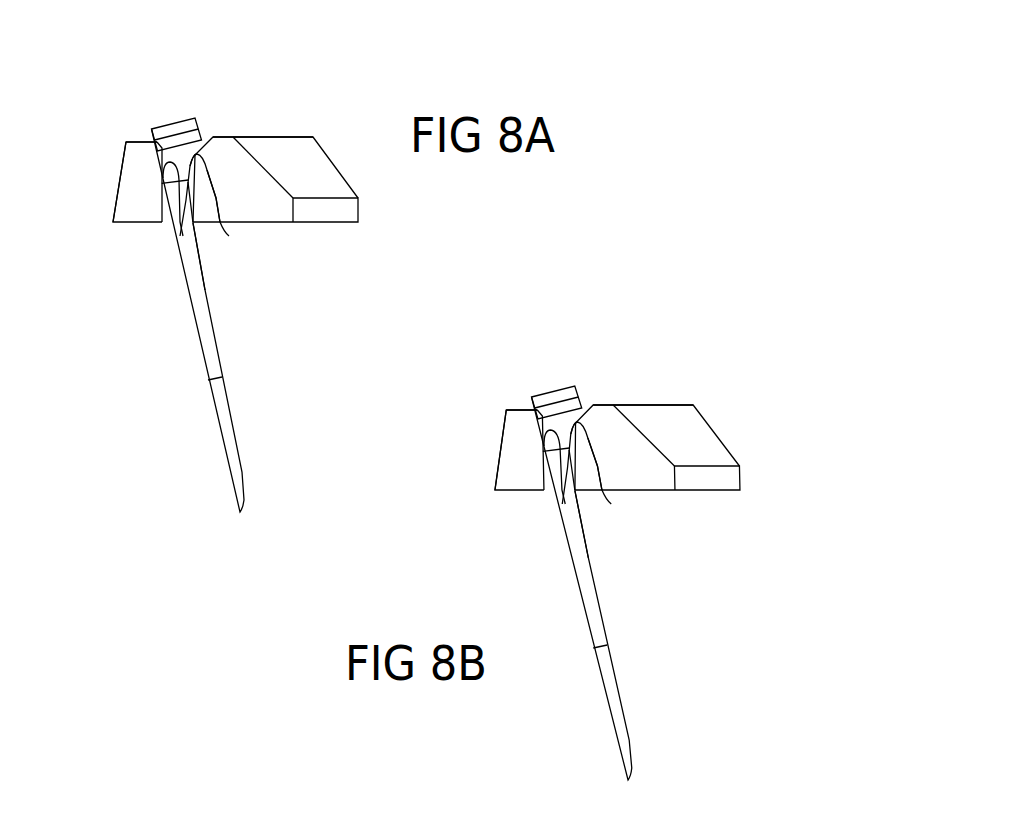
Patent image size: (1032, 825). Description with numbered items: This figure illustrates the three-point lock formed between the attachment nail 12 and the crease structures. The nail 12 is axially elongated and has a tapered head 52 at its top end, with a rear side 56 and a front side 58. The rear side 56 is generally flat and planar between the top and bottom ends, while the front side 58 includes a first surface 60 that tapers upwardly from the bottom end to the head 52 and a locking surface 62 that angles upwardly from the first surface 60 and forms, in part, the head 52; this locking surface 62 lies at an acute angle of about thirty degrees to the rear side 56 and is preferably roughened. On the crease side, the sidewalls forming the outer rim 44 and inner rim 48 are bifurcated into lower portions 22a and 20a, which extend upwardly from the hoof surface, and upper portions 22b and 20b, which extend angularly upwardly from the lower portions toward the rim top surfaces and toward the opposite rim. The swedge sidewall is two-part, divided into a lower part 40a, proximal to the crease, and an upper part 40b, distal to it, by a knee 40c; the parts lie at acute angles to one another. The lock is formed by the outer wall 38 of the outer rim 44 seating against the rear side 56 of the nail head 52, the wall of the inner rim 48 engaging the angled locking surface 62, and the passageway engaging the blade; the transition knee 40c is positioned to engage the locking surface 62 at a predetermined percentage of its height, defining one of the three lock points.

In FIG. 8A, the attachment nail 12 is at (135, 338).
In FIG. 8B, the attachment nail 12 is at (494, 518).
In FIG. 8A, the lower portion of outer sidewall 20a is at (350, 213).
In FIG. 8B, the lower portion of outer sidewall 20a is at (699, 480).
In FIG. 8A, the upper portion of outer sidewall 20b is at (323, 160).
In FIG. 8B, the upper portion of outer sidewall 20b is at (672, 420).
In FIG. 8A, the lower portion of inner sidewall 22a is at (113, 208).
In FIG. 8B, the lower portion of inner sidewall 22a is at (479, 450).
In FIG. 8A, the upper portion of inner sidewall 22b is at (120, 168).
In FIG. 8B, the upper portion of inner sidewall 22b is at (478, 450).
In FIG. 8A, the outer wall of outer rim 38 is at (172, 230).
In FIG. 8B, the outer wall of outer rim 38 is at (522, 491).
In FIG. 8A, the lower part of swedge sidewall 40a is at (192, 233).
In FIG. 8B, the lower part of swedge sidewall 40a is at (602, 489).
In FIG. 8A, the upper part of swedge sidewall 40b is at (195, 152).
In FIG. 8B, the upper part of swedge sidewall 40b is at (613, 431).
In FIG. 8A, the knee 40c is at (193, 150).
In FIG. 8B, the knee 40c is at (590, 382).
In FIG. 8A, the outer rim 44 is at (122, 138).
In FIG. 8B, the outer rim 44 is at (489, 383).
In FIG. 8A, the inner rim 48 is at (290, 130).
In FIG. 8B, the inner rim 48 is at (651, 356).
In FIG. 8A, the tapered head 52 is at (143, 124).
In FIG. 8B, the tapered head 52 is at (521, 354).
In FIG. 8A, the rear side 56 is at (198, 405).
In FIG. 8B, the rear side 56 is at (563, 588).
In FIG. 8A, the front side 58 is at (235, 388).
In FIG. 8B, the front side 58 is at (651, 629).
In FIG. 8A, the first surface 60 is at (205, 280).
In FIG. 8B, the first surface 60 is at (617, 539).
In FIG. 8A, the locking surface 62 is at (216, 210).
In FIG. 8B, the locking surface 62 is at (620, 479).